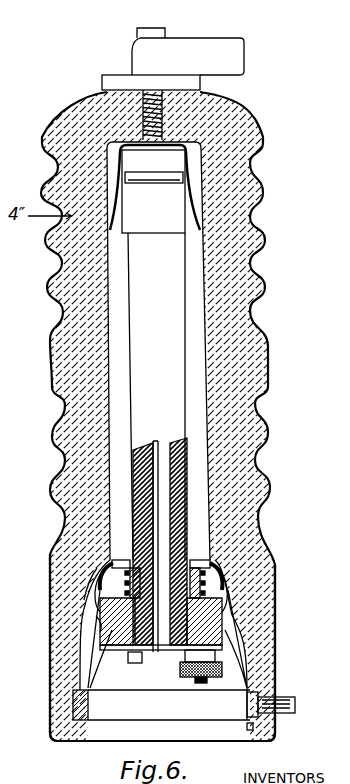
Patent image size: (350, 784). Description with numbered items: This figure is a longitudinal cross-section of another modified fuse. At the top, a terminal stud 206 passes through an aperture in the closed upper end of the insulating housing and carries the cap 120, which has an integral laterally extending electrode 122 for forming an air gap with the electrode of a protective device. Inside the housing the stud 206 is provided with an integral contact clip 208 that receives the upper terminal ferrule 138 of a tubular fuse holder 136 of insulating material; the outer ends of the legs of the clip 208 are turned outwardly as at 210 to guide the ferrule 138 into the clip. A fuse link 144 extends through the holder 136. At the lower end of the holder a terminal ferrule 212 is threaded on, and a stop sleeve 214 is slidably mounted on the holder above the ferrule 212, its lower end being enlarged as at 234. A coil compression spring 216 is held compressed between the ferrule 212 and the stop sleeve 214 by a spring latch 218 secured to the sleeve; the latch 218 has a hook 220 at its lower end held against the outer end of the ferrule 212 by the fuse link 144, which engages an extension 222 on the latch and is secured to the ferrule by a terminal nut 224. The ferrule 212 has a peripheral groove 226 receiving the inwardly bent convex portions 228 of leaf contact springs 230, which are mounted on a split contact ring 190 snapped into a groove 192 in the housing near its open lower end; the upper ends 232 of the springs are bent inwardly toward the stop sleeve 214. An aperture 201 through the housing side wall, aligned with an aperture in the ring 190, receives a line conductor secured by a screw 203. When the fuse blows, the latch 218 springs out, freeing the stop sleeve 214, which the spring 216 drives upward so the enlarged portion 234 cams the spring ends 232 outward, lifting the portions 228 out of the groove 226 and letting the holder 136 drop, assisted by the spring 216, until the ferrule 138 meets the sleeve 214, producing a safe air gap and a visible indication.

The electrode 122 is at (228, 44).
The cap 120 is at (104, 83).
The terminal stud 206 is at (166, 110).
The contact clip 208 is at (193, 192).
The outwardly turned leg ends 210 is at (203, 227).
The terminal ferrule 138 is at (180, 227).
The tubular fuse holder 136 is at (178, 348).
The fuse link 144 is at (160, 477).
The stop sleeve 214 is at (243, 533).
The upper ends of contact springs 232 is at (97, 583).
The coil compression spring 216 is at (212, 577).
The terminal ferrule 212 is at (232, 617).
The inwardly bent convex portion 228 is at (100, 635).
The groove 226 is at (230, 637).
The hook 220 is at (110, 655).
The leaf contact springs 230 is at (87, 673).
The enlarged portion 234 is at (100, 602).
The spring latch 218 is at (100, 628).
The extension 222 is at (136, 664).
The terminal nut 224 is at (219, 683).
The split contact ring 190 is at (76, 697).
The groove 192 is at (70, 723).
The aperture 201 is at (280, 715).
The screw 203 is at (250, 731).